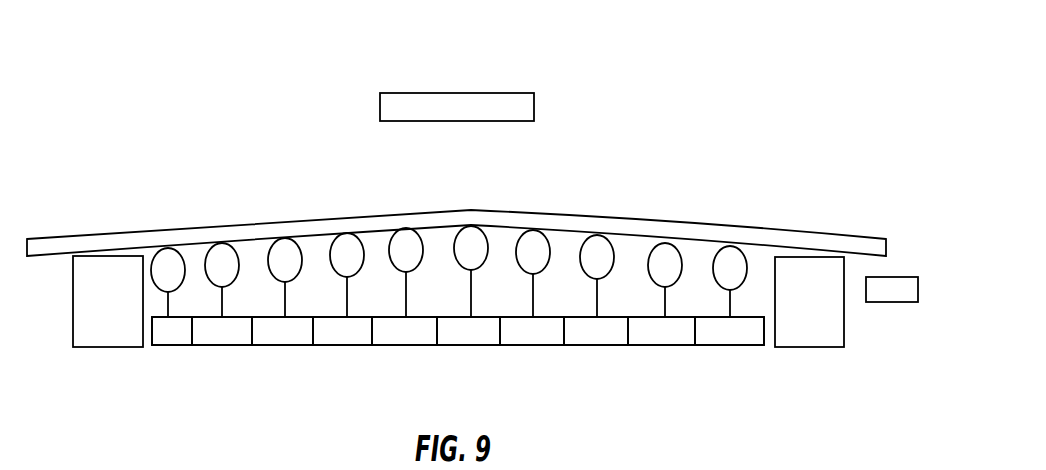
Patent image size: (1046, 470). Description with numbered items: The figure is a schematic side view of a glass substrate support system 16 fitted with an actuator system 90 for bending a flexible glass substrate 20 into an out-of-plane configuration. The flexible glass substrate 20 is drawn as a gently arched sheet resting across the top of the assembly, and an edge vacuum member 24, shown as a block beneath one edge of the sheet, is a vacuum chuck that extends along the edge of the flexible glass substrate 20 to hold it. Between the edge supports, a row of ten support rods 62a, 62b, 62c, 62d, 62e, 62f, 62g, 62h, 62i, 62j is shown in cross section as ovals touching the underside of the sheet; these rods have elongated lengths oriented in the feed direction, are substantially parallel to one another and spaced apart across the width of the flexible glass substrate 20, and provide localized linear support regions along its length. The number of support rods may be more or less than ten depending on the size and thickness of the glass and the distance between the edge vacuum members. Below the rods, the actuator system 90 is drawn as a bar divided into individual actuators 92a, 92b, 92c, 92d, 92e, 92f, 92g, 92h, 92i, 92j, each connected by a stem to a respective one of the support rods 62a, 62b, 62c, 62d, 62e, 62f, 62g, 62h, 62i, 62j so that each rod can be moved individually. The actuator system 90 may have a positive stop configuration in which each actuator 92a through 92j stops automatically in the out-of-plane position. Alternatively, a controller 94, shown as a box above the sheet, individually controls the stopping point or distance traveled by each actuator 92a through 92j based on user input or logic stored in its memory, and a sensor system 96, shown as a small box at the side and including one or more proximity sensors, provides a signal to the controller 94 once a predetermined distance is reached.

The glass substrate support system 16 is at (632, 155).
The flexible glass substrate 20 is at (782, 240).
The edge vacuum member 24 is at (62, 322).
The support rod 62a is at (164, 268).
The support rod 62b is at (218, 262).
The support rod 62c is at (282, 257).
The support rod 62d is at (344, 252).
The support rod 62e is at (404, 247).
The support rod 62f is at (470, 245).
The support rod 62g is at (531, 249).
The support rod 62h is at (599, 254).
The support rod 62i is at (666, 262).
The support rod 62j is at (730, 265).
The actuator system 90 is at (704, 392).
The actuator 92a is at (170, 334).
The actuator 92b is at (223, 334).
The actuator 92c is at (279, 334).
The actuator 92d is at (340, 334).
The actuator 92e is at (399, 334).
The actuator 92f is at (466, 334).
The actuator 92g is at (534, 334).
The actuator 92h is at (600, 334).
The actuator 92i is at (664, 334).
The actuator 92j is at (727, 334).
The controller 94 is at (442, 105).
The sensor system 96 is at (900, 287).